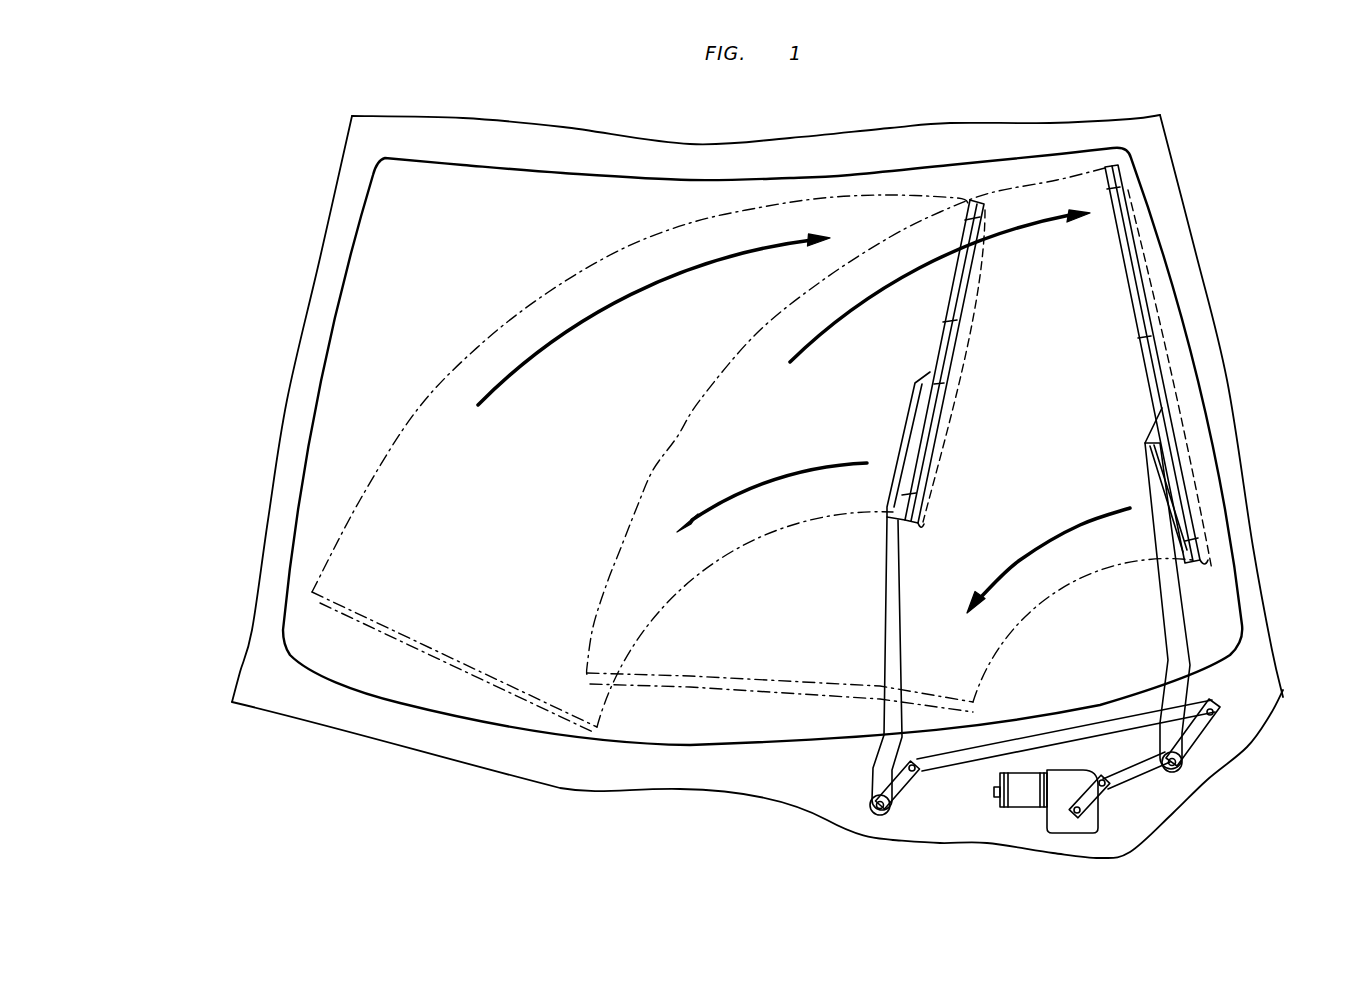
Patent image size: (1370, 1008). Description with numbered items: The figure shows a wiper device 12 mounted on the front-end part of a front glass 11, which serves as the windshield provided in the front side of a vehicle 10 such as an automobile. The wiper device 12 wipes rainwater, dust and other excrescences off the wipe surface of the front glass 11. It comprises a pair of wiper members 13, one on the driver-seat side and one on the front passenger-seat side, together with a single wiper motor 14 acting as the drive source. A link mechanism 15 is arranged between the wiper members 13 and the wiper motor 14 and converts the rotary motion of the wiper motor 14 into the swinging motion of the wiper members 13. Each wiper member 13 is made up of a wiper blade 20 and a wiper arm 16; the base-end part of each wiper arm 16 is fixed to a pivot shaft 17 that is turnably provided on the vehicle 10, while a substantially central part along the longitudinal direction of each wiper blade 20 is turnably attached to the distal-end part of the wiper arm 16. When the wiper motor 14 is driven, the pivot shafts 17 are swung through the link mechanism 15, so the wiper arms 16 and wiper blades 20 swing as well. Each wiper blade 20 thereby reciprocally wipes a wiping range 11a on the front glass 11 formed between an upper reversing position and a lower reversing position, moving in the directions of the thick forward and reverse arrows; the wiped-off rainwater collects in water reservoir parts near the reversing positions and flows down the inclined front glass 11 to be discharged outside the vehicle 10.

The vehicle 10 is at (285, 168).
The front glass 11 is at (377, 313).
The wiping range 11a is at (547, 295).
The wiper device 12 is at (1153, 813).
The wiper member 13 is at (1044, 487).
The wiper motor 14 is at (1052, 814).
The link mechanism 15 is at (958, 790).
The wiper arm 16 is at (890, 623).
The pivot shaft 17 is at (872, 808).
The wiper blade 20 is at (960, 268).